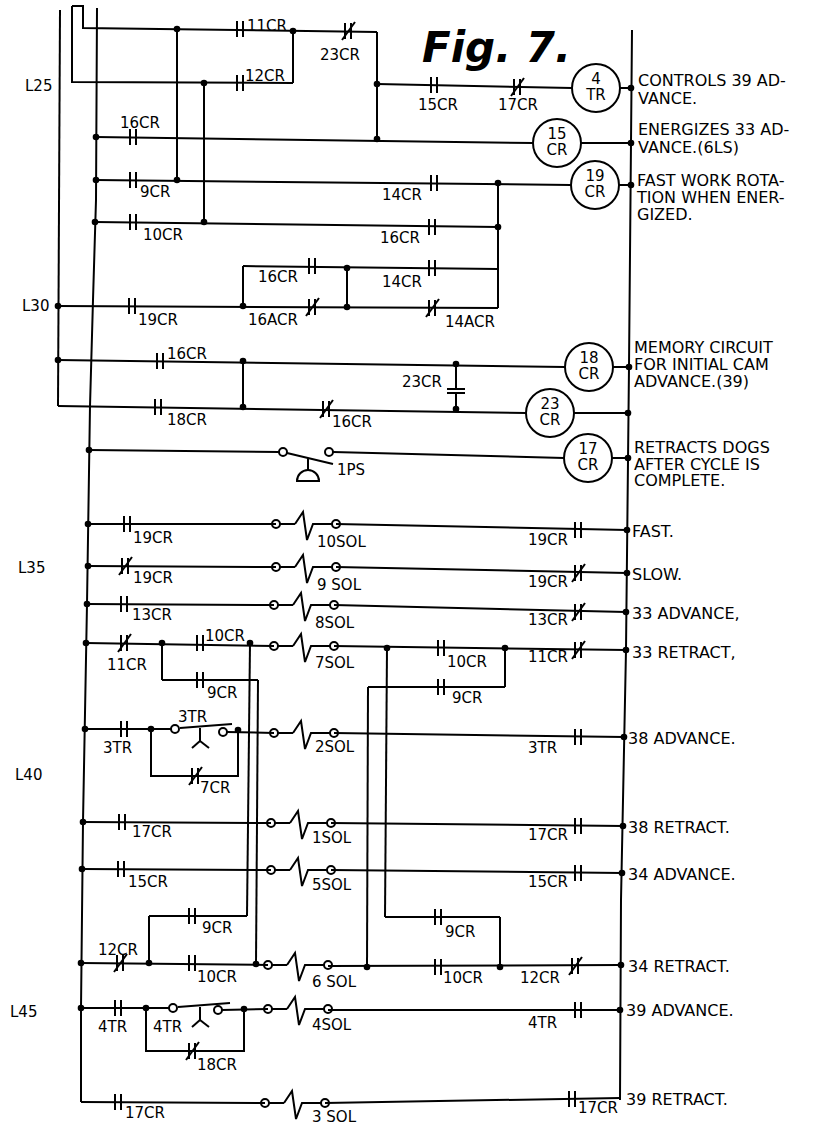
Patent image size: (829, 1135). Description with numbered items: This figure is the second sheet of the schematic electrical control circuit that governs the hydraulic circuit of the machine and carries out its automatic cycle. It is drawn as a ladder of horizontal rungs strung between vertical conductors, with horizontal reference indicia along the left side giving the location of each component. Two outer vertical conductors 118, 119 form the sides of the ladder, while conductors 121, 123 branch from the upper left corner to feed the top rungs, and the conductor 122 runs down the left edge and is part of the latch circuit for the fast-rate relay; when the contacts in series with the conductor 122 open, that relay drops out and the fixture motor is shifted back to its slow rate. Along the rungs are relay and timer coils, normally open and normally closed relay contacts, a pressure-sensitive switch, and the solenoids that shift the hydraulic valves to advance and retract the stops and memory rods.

The supply line L1 118 is at (99, 15).
The supply line L2 119 is at (632, 50).
The control line 121 is at (72, 44).
The conductor 122 is at (59, 202).
The control line 123 is at (60, 13).